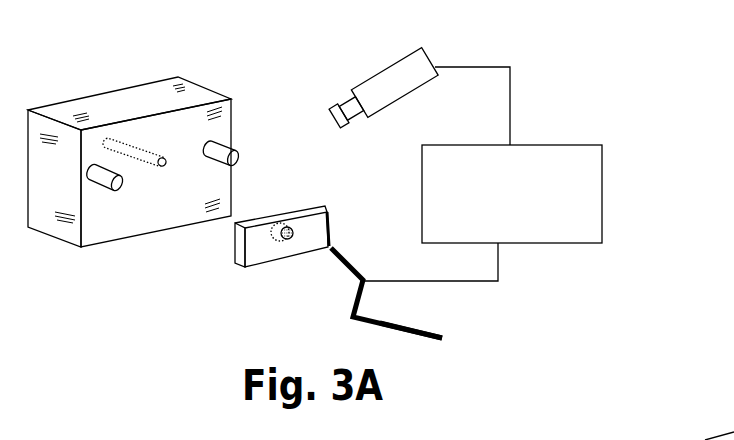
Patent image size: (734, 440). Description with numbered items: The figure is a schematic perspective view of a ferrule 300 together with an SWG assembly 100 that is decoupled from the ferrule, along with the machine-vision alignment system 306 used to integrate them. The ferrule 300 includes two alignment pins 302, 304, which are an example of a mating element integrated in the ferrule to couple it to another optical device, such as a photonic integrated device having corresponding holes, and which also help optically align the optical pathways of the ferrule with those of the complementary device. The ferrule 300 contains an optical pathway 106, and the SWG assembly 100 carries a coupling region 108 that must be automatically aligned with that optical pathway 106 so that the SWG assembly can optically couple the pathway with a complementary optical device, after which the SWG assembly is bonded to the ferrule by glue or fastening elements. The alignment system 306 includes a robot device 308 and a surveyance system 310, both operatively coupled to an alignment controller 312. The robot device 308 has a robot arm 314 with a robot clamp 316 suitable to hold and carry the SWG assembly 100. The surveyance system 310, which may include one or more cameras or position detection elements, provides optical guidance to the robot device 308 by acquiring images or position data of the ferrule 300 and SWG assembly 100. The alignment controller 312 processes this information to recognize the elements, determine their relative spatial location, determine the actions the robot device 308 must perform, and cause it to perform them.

The ferrule 300 is at (116, 74).
The alignment pin 302 is at (231, 148).
The alignment pin 304 is at (97, 186).
The optical pathway 106 is at (137, 160).
The SWG assembly 100 is at (234, 246).
The coupling region 108 is at (286, 240).
The robot clamp 316 is at (333, 238).
The robot arm 314 is at (402, 325).
The robot device 308 is at (459, 319).
The surveyance system 310 is at (400, 62).
The alignment controller 312 is at (593, 245).
The alignment system 306 is at (559, 76).